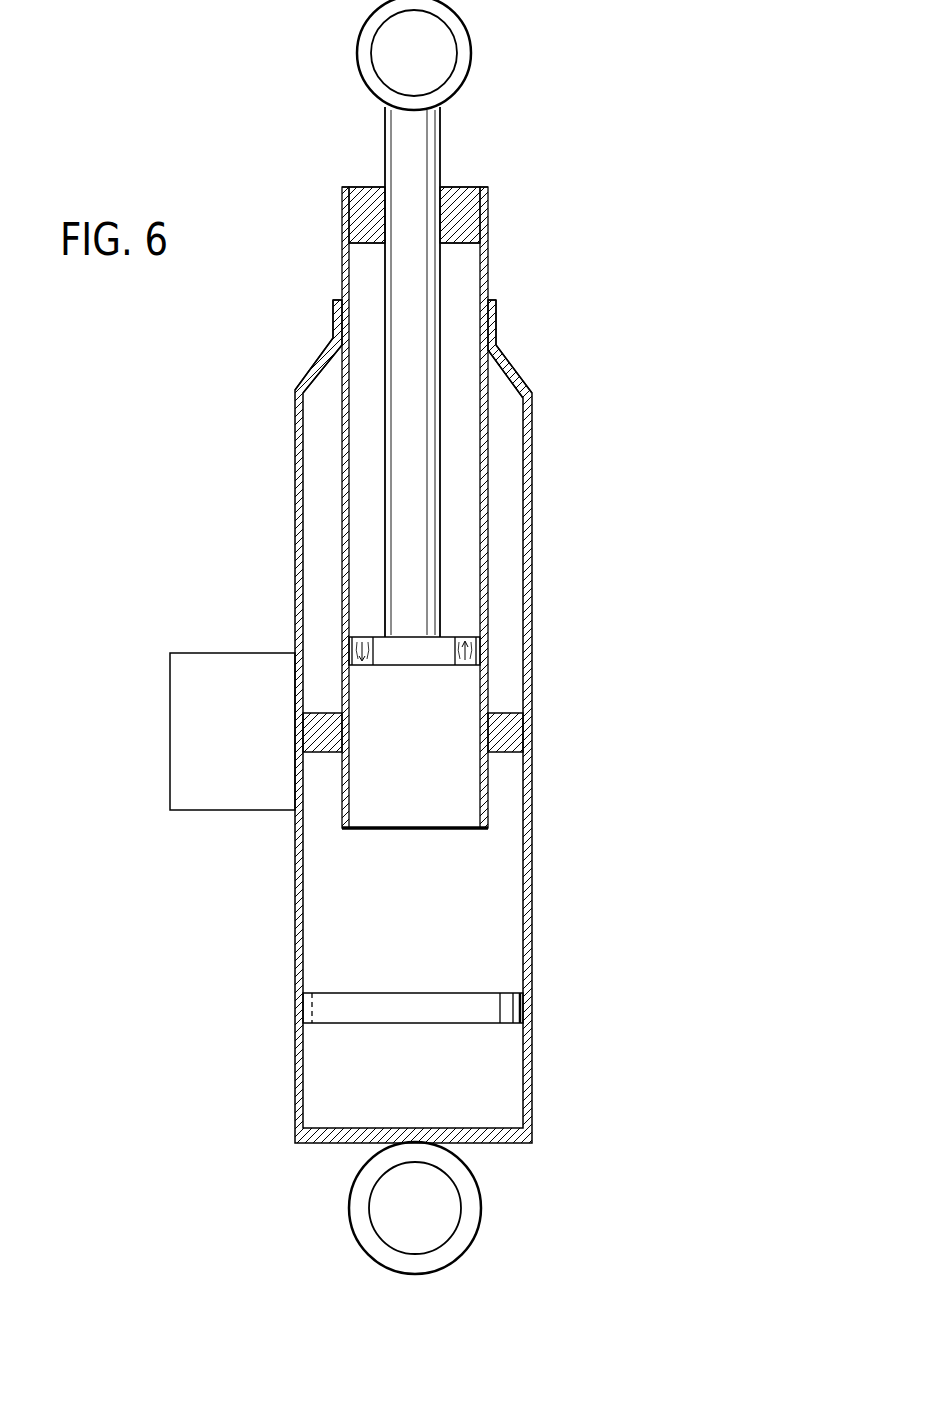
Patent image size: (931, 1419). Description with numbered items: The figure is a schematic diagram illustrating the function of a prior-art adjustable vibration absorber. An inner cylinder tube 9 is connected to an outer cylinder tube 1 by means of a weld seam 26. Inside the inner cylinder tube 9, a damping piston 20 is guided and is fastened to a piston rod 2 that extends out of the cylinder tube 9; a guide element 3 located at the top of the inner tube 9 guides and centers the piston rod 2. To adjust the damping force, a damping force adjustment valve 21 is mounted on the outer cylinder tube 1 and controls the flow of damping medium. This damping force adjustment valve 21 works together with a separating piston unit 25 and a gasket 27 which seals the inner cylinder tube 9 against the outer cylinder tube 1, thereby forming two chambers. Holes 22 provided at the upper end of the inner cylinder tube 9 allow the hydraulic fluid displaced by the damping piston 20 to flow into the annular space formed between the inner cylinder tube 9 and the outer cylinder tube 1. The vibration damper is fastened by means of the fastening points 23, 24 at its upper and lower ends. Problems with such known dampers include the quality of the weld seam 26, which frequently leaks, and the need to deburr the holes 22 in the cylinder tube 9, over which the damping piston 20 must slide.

The outer cylinder tube 1 is at (532, 522).
The piston rod 2 is at (427, 172).
The guide element 3 is at (458, 226).
The inner cylinder tube 9 is at (487, 688).
The damping piston 20 is at (438, 652).
The damping force adjustment valve 21 is at (223, 678).
The holes 22 is at (340, 372).
The fastening point 23 is at (465, 52).
The fastening point 24 is at (462, 1232).
The separating piston unit 25 is at (483, 1007).
The weld seam 26 is at (340, 300).
The gasket 27 is at (530, 735).